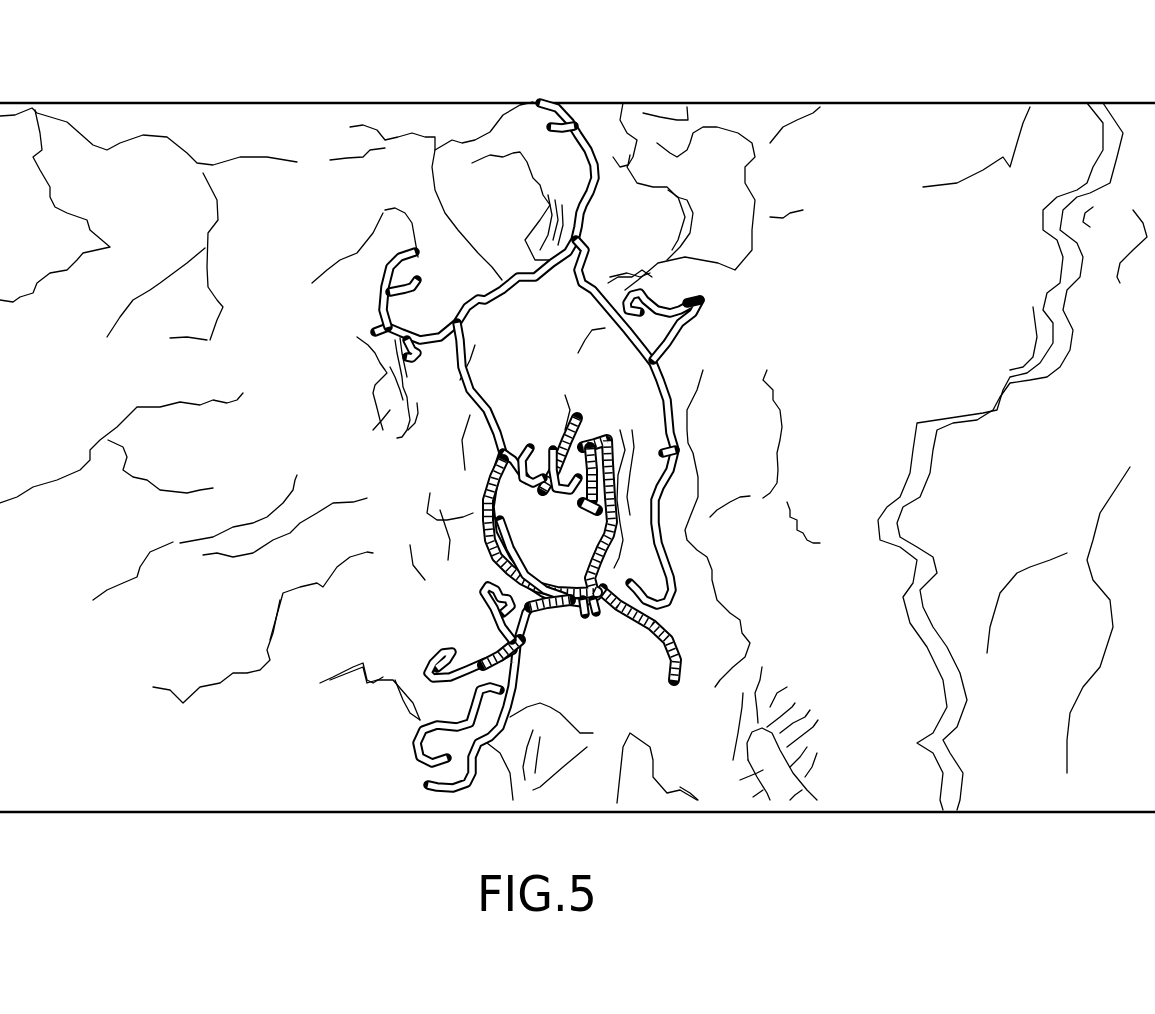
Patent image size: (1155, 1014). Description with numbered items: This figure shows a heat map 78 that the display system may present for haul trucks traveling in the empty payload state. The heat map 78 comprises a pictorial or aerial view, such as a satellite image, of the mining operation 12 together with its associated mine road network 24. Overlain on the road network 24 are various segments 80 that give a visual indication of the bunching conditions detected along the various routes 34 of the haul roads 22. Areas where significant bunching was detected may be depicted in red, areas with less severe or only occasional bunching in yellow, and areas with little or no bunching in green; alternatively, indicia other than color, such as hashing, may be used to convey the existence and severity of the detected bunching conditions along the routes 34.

The heat map 78 is at (298, 78).
The mining operation 12 is at (120, 831).
The haul roads 22 is at (503, 291).
The mine road network 24 is at (443, 383).
The routes 34 is at (478, 299).
The segments 80 is at (652, 367).